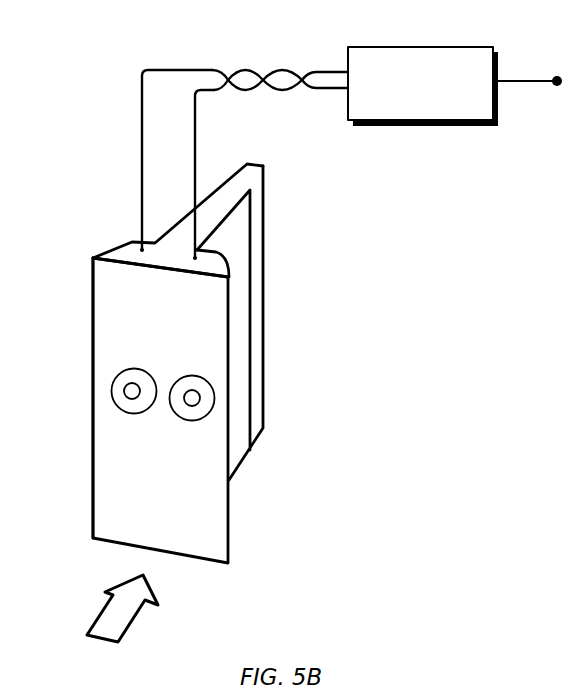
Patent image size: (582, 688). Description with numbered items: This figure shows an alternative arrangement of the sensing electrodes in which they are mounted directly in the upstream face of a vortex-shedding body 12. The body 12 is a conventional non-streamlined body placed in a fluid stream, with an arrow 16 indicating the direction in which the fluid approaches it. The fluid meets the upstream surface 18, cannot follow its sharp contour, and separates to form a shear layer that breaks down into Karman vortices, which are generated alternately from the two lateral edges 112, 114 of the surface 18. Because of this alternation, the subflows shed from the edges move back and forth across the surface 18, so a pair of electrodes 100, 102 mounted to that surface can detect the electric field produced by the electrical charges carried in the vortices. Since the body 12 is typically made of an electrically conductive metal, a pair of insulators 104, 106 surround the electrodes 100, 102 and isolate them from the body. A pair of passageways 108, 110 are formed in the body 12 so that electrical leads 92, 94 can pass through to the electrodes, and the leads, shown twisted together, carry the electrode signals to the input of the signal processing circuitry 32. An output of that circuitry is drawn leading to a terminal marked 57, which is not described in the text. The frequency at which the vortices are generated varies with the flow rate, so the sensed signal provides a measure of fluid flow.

The vortex-shedding body 12 is at (110, 250).
The arrow 16 is at (113, 584).
The upstream surface 18 is at (105, 307).
The signal processing circuitry 32 is at (492, 47).
The output terminal 57 is at (557, 86).
The electrical lead 92 is at (198, 70).
The electrical lead 94 is at (245, 70).
The electrode 100 is at (200, 404).
The electrode 102 is at (132, 400).
The insulator 104 is at (208, 387).
The insulator 106 is at (112, 392).
The passageway 108 is at (229, 273).
The passageway 110 is at (125, 262).
The lateral edge 112 is at (232, 325).
The lateral edge 114 is at (92, 357).